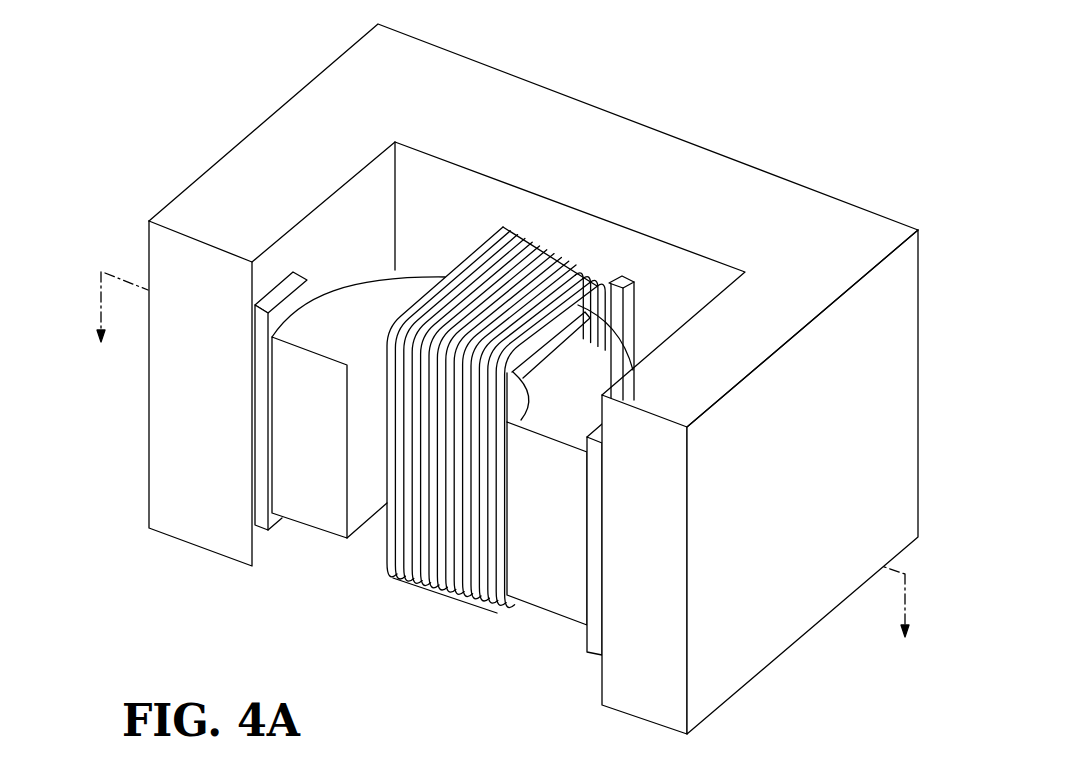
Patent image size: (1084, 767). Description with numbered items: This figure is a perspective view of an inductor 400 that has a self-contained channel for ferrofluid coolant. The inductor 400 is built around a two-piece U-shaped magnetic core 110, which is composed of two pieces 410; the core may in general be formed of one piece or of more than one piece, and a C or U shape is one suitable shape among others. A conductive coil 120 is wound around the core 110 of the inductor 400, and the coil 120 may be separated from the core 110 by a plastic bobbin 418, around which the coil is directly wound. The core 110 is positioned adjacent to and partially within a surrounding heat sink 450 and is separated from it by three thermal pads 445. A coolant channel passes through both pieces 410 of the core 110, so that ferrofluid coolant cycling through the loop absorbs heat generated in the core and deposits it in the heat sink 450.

The inductor 400 is at (502, 383).
The magnetic core 110 is at (380, 268).
The conductive coil 120 is at (418, 588).
The pieces 410 is at (318, 533).
The plastic bobbin 418 is at (588, 314).
The thermal pads 445 is at (283, 276).
The housing 450 is at (640, 126).